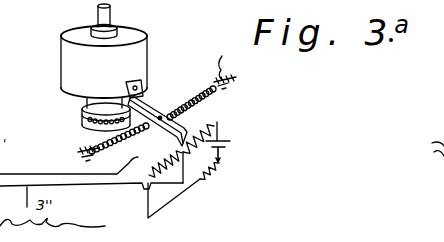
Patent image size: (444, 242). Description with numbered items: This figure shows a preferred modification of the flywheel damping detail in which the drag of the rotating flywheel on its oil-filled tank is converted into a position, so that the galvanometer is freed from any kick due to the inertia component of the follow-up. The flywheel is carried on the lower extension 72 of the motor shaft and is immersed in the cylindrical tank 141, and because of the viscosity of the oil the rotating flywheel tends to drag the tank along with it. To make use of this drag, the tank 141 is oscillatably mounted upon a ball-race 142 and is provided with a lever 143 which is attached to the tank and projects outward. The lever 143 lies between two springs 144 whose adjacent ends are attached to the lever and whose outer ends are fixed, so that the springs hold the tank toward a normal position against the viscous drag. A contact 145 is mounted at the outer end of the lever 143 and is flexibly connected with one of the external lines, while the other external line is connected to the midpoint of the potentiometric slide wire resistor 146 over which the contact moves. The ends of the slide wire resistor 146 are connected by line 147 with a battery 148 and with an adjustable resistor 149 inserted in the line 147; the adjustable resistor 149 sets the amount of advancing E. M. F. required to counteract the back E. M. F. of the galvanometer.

The lower extension 72 is at (111, 13).
The tank 141 is at (62, 54).
The ball-race 142 is at (83, 118).
The lever 143 is at (150, 96).
The springs 144 is at (75, 146).
The contact 145 is at (190, 128).
The potentiometric slide wire resistor 146 is at (177, 152).
The line 147 is at (228, 136).
The battery 148 is at (226, 148).
The adjustable resistor 149 is at (212, 179).